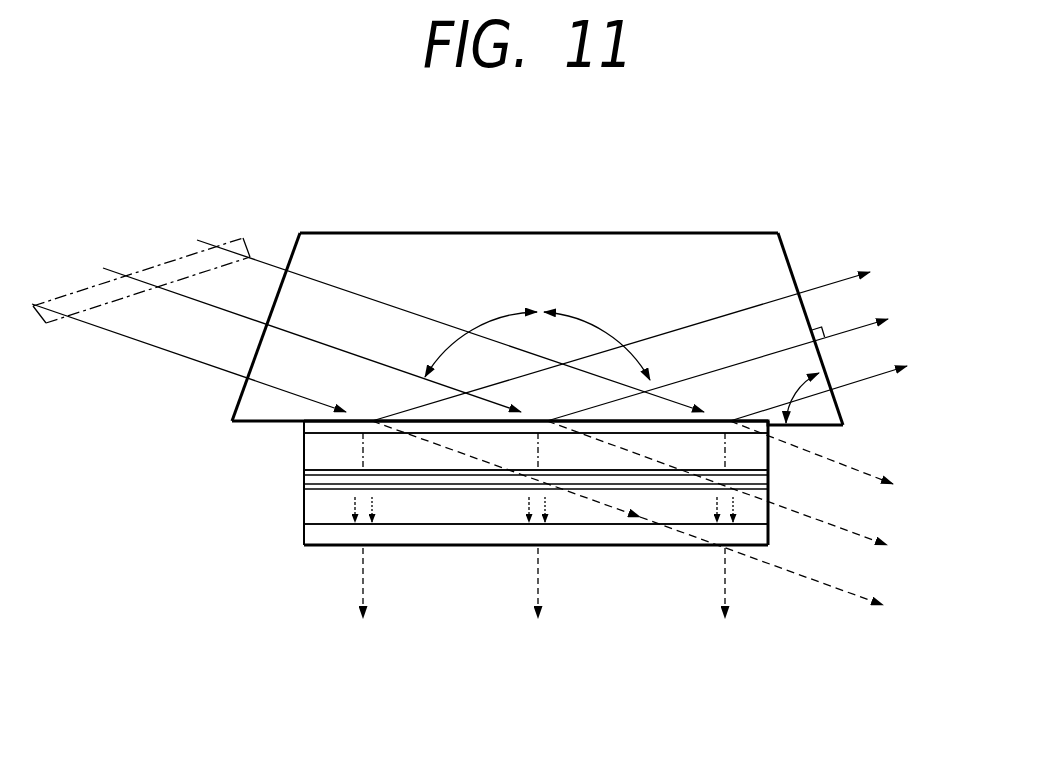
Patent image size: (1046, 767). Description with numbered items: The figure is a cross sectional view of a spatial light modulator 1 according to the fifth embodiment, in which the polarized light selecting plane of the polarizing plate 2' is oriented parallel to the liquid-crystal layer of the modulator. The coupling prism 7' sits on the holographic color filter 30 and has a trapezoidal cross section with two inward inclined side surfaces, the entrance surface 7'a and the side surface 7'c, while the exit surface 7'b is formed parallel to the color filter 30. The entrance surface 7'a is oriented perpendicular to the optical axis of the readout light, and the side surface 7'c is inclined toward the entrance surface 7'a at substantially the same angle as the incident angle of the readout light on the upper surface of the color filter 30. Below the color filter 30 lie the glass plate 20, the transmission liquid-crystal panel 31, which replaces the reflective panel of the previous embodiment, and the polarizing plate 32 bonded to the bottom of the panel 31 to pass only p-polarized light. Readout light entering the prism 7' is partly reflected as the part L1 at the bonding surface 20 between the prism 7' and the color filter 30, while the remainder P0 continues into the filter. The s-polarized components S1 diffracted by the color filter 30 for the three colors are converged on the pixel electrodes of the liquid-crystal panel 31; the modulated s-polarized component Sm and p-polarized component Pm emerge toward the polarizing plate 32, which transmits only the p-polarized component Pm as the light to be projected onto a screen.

The spatial light modulator 1 is at (298, 168).
The polarizing plate 2' is at (141, 260).
The coupling prism 7' is at (547, 298).
The entrance surface 7'a is at (266, 300).
The exit surface 7'b is at (539, 203).
The side surface 7'c is at (820, 321).
The glass plate 20 is at (304, 448).
The holographic color filter 30 is at (304, 426).
The transmission liquid-crystal panel 31 is at (295, 465).
The polarizing plate 32 is at (304, 537).
The part of the readout light L1 is at (655, 338).
The transmitted light P0 is at (650, 522).
The p-polarized component Pm is at (792, 537).
The s-polarized component Sm is at (514, 512).
The s-polarized components S1 is at (544, 451).